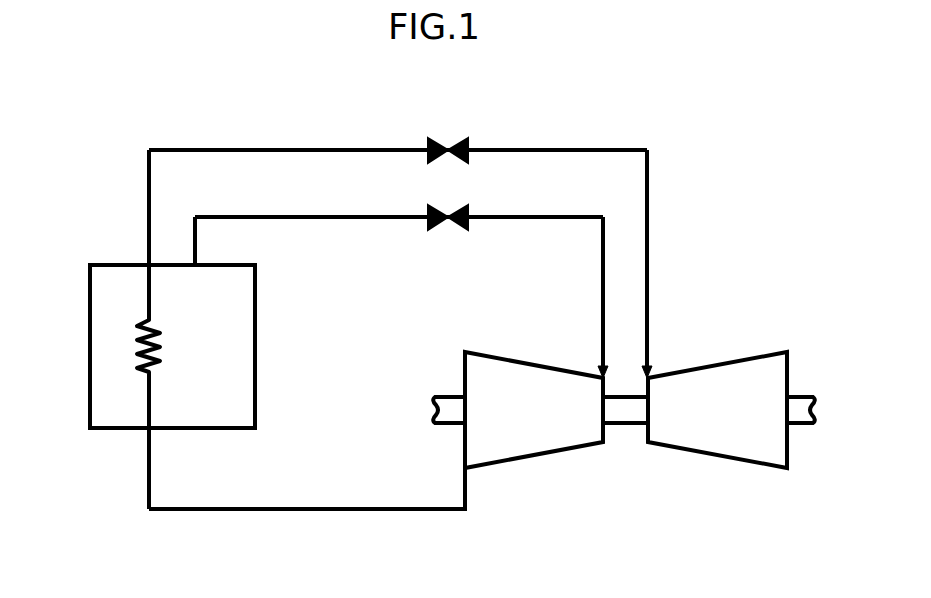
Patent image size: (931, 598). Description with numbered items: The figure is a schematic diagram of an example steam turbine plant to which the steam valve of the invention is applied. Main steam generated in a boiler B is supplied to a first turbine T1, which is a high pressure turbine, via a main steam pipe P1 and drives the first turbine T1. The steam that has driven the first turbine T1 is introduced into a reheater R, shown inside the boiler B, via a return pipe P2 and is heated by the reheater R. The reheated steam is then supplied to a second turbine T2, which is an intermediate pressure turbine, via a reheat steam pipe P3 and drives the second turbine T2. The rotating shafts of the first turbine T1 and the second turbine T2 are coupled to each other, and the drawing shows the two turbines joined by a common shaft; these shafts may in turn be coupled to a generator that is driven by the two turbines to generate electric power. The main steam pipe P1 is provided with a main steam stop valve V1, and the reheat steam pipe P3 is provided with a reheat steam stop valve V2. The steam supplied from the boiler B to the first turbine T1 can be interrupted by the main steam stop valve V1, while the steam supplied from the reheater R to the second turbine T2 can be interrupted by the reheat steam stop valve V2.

The main steam pipe P1 is at (288, 215).
The return pipe P2 is at (288, 507).
The reheat steam pipe P3 is at (288, 148).
The main steam stop valve V1 is at (449, 214).
The reheat steam stop valve V2 is at (449, 147).
The boiler B is at (90, 348).
The reheater R is at (160, 334).
The first turbine T1 is at (535, 364).
The second turbine T2 is at (716, 364).